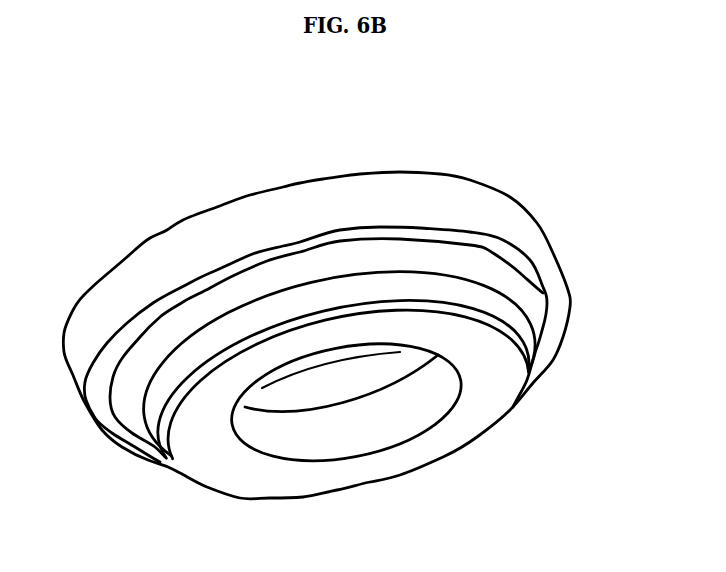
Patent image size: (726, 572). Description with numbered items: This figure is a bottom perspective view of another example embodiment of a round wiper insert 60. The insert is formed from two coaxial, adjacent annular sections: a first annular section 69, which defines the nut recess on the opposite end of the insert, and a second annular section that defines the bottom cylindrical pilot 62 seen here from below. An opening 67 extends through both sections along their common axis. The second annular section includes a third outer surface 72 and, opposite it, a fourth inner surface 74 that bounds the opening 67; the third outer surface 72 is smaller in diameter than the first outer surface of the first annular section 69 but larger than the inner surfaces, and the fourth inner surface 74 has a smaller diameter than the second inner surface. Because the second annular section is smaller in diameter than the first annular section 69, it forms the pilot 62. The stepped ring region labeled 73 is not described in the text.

The round wiper insert 60 is at (187, 148).
The first annular section 69 is at (320, 204).
The outer ring step 73 is at (547, 277).
The third outer surface 72 is at (487, 303).
The bottom cylindrical pilot 62 is at (205, 463).
The opening 67 is at (347, 387).
The fourth inner surface 74 is at (317, 443).